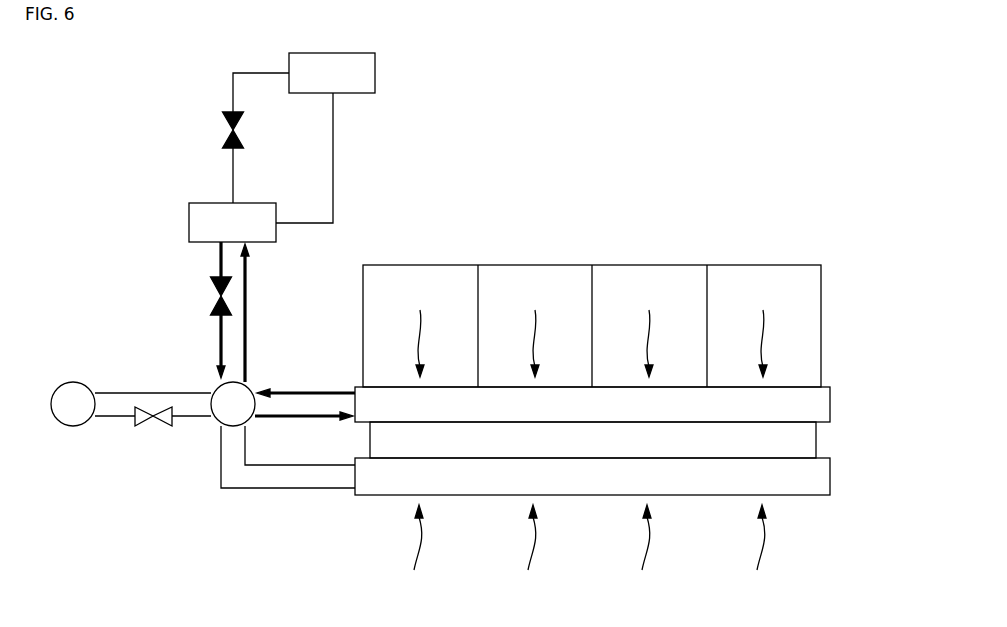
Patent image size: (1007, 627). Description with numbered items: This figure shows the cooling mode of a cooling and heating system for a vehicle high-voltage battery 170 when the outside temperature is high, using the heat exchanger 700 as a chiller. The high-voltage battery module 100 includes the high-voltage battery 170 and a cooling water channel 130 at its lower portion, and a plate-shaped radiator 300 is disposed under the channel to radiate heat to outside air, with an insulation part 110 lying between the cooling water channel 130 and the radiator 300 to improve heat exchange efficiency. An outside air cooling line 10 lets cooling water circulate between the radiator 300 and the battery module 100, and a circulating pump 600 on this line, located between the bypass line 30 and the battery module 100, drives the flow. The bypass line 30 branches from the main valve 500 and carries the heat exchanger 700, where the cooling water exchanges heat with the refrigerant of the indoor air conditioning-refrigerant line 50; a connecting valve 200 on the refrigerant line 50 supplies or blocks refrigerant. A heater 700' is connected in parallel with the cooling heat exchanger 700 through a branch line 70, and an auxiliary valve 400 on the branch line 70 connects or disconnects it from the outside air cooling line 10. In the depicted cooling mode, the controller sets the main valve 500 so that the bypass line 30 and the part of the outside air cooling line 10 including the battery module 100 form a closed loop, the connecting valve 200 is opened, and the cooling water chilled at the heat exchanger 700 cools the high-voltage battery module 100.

The outside air cooling line 10 is at (305, 489).
The bypass line 30 is at (246, 298).
The indoor air conditioning-refrigerant line 50 is at (375, 73).
The branch line 70 is at (110, 392).
The high-voltage battery module 100 is at (592, 275).
The insulation part 110 is at (803, 437).
The cooling water channel 130 is at (810, 405).
The high-voltage battery 170 is at (527, 264).
The connecting valve 200 is at (225, 131).
The radiator 300 is at (810, 476).
The auxiliary valve 400 is at (160, 428).
The main valve 500 is at (212, 298).
The circulating pump 600 is at (252, 388).
The heat exchanger 700 is at (181, 222).
The heater 700' is at (62, 440).